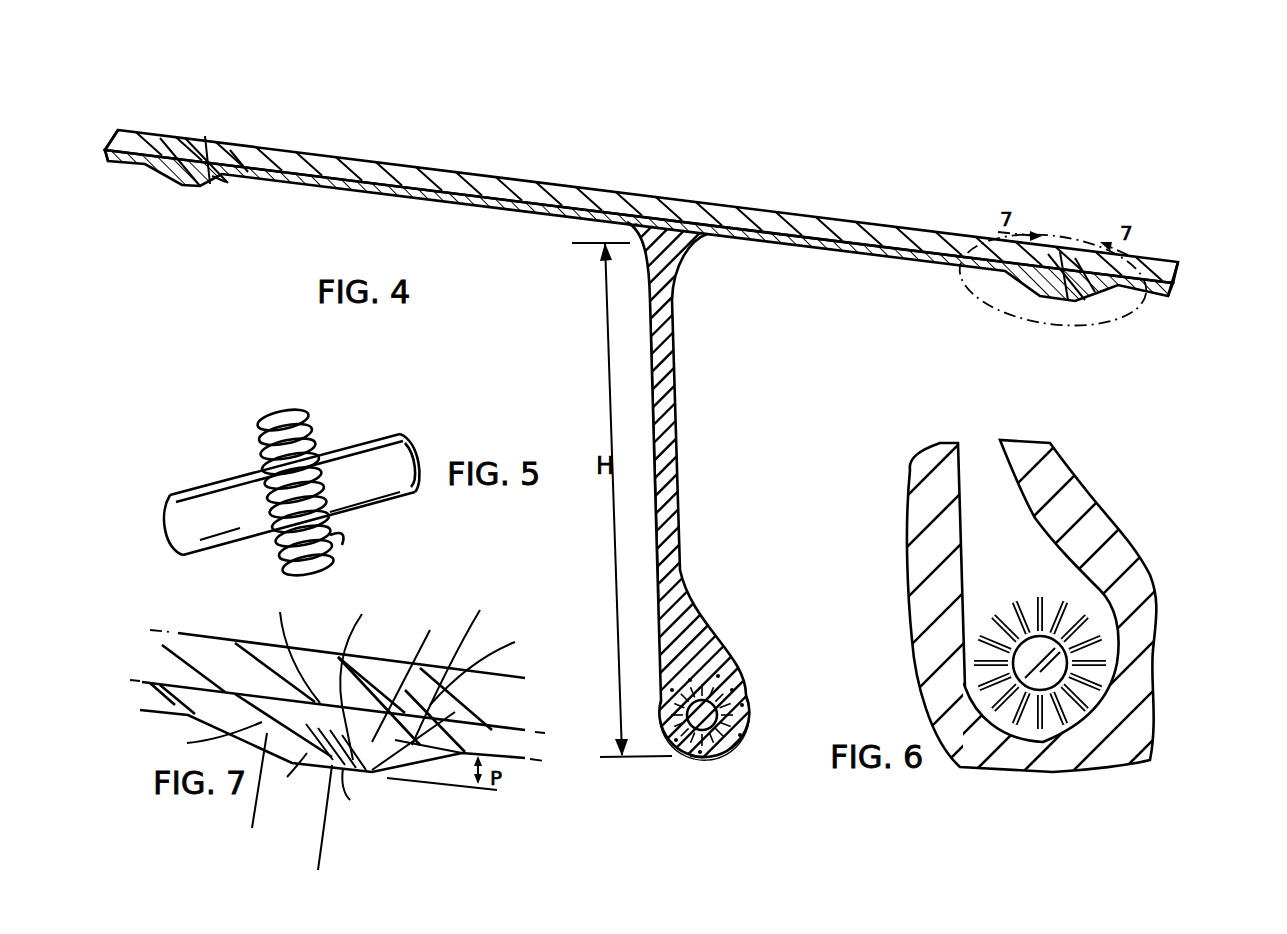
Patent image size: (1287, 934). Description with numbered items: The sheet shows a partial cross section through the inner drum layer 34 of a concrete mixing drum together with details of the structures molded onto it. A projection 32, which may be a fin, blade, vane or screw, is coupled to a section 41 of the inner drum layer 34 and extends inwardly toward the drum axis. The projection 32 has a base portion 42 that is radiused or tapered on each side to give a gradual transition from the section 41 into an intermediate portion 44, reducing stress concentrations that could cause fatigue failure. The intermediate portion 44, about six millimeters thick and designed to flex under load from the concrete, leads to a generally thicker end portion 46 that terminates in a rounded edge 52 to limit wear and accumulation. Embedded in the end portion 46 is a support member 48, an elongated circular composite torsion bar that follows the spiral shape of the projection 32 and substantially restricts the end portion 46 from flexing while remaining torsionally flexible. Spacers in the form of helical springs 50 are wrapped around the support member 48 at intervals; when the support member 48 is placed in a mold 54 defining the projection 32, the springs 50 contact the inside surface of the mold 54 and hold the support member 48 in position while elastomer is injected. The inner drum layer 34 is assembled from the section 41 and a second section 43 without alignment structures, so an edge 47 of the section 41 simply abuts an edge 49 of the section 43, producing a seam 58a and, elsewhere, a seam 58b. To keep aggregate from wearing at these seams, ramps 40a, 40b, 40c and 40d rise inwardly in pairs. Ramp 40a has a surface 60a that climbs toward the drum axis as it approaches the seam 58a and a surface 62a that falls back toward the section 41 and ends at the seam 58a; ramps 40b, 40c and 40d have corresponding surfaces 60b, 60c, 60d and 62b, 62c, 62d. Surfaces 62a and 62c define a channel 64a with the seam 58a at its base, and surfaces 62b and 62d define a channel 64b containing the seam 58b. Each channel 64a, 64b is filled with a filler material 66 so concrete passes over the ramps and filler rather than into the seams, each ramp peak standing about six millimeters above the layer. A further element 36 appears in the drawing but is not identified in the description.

In FIG. 4, the projection 32 is at (676, 504).
In FIG. 4, the inner drum layer 34 is at (453, 204).
In FIG. 4, the upper flange layer 36 is at (428, 182).
In FIG. 4, the ramp 40a is at (225, 187).
In FIG. 4, the ramp 40b is at (1040, 297).
In FIG. 7, the ramp 40b is at (249, 793).
In FIG. 4, the ramp 40c is at (152, 170).
In FIG. 4, the ramp 40d is at (1105, 298).
In FIG. 7, the ramp 40d is at (461, 664).
In FIG. 4, the section 41 is at (318, 192).
In FIG. 4, the base portion 42 is at (692, 263).
In FIG. 4, the section 43 is at (112, 168).
In FIG. 4, the intermediate portion 44 is at (676, 432).
In FIG. 4, the end portion 46 is at (746, 692).
In FIG. 4, the edge 47 is at (236, 165).
In FIG. 7, the edge 47 is at (409, 671).
In FIG. 4, the support member 48 is at (718, 752).
In FIG. 5, the support member 48 is at (370, 455).
In FIG. 6, the support member 48 is at (1040, 666).
In FIG. 4, the edge 49 is at (173, 160).
In FIG. 7, the edge 49 is at (287, 648).
In FIG. 4, the helical springs 50 is at (688, 757).
In FIG. 5, the helical springs 50 is at (298, 415).
In FIG. 6, the helical springs 50 is at (1032, 735).
In FIG. 4, the rounded edge 52 is at (706, 760).
In FIG. 6, the mold 54 is at (1085, 530).
In FIG. 4, the seam 58a is at (194, 158).
In FIG. 4, the seam 58b is at (1060, 265).
In FIG. 7, the seam 58b is at (374, 679).
In FIG. 4, the surface 60a is at (240, 180).
In FIG. 4, the surface 60b is at (1000, 292).
In FIG. 7, the surface 60b is at (202, 739).
In FIG. 4, the surface 60c is at (122, 160).
In FIG. 4, the surface 60d is at (1135, 292).
In FIG. 7, the surface 60d is at (494, 663).
In FIG. 4, the surface 62a is at (195, 185).
In FIG. 4, the surface 62b is at (1055, 298).
In FIG. 7, the surface 62b is at (287, 779).
In FIG. 4, the surface 62c is at (182, 182).
In FIG. 4, the surface 62d is at (1063, 300).
In FIG. 7, the surface 62d is at (352, 796).
In FIG. 4, the channel 64a is at (187, 158).
In FIG. 4, the channel 64b is at (1075, 272).
In FIG. 4, the filler material 66 is at (215, 182).
In FIG. 7, the filler material 66 is at (318, 831).